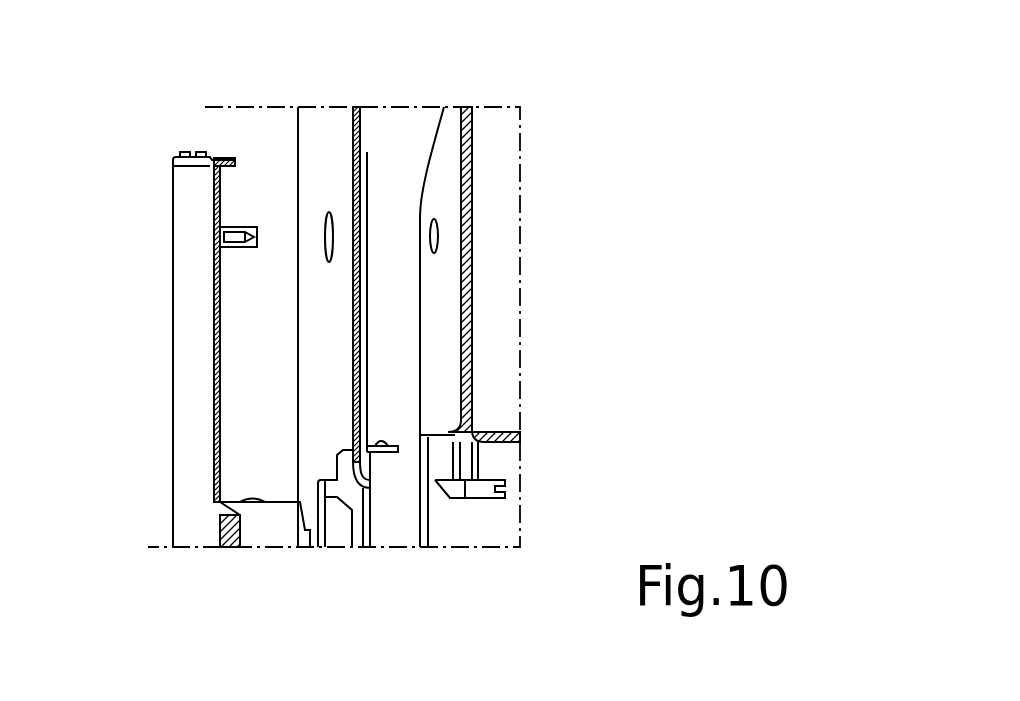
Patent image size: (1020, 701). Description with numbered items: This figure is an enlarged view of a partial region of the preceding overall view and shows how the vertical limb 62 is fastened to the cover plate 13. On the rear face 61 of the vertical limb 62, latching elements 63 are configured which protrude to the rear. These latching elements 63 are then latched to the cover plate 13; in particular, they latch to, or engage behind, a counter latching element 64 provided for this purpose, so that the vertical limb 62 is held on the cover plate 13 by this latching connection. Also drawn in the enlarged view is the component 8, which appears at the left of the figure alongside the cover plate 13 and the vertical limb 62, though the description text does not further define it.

The panel 8 is at (192, 343).
The cover plate 13 is at (552, 133).
The rear face 61 is at (367, 152).
The vertical limb 62 is at (315, 150).
The latching elements 63 is at (381, 455).
The counter latching element 64 is at (449, 428).